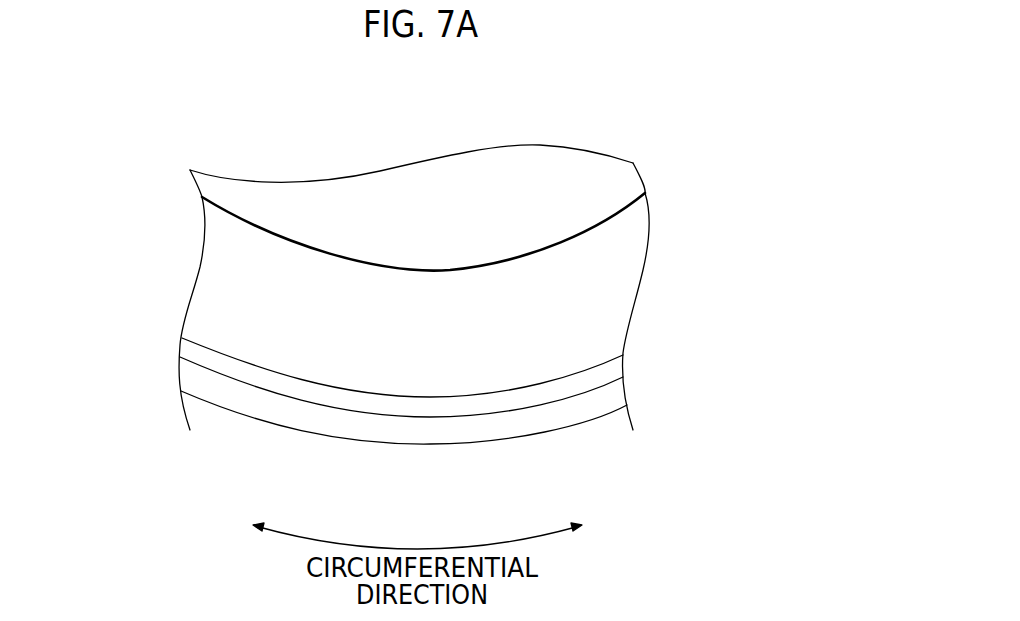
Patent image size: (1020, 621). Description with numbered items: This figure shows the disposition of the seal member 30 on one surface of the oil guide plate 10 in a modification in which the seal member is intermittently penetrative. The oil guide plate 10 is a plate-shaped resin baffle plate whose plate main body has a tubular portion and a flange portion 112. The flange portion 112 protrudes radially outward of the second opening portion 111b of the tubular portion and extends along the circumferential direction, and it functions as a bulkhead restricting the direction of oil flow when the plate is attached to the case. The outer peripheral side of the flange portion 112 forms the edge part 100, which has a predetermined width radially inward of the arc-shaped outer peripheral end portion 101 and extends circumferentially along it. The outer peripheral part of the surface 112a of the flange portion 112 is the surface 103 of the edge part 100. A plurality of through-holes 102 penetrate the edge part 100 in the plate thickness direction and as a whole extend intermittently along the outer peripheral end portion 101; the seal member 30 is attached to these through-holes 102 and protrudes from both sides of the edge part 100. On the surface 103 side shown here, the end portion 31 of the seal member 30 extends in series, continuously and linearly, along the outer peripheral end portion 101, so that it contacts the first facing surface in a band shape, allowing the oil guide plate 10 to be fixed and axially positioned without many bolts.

The oil guide plate 10 is at (427, 292).
The edge part 100 is at (414, 423).
The outer peripheral end portion 101 is at (283, 428).
The through-hole 102 is at (533, 405).
The surface of the edge part 103 is at (605, 397).
The seal member 30 is at (407, 416).
The end portion of the seal member 31 is at (465, 406).
The second opening portion 111b is at (288, 242).
The flange portion 112 is at (240, 269).
The surface of the flange portion 112a is at (605, 274).